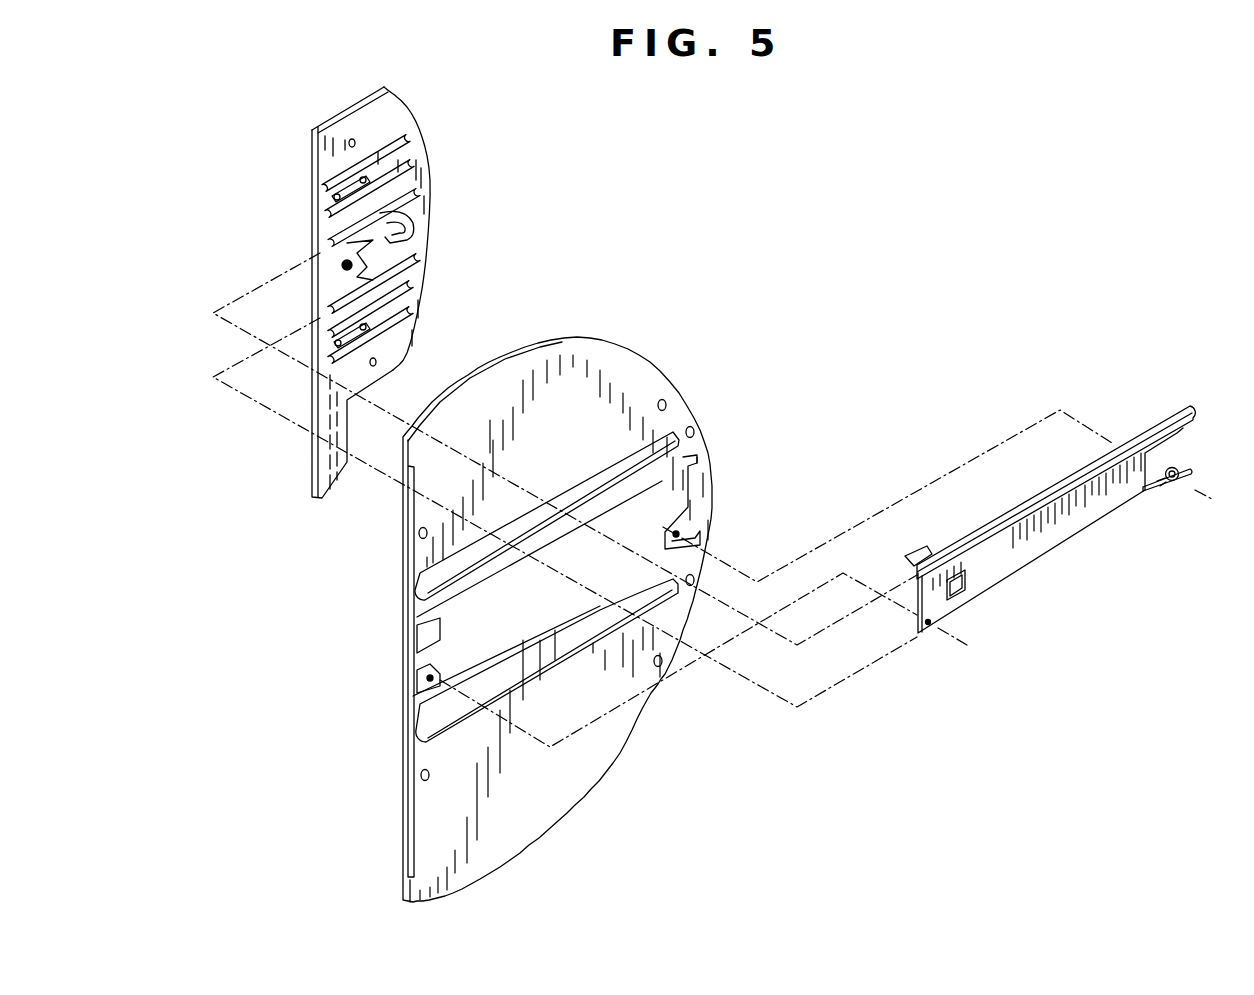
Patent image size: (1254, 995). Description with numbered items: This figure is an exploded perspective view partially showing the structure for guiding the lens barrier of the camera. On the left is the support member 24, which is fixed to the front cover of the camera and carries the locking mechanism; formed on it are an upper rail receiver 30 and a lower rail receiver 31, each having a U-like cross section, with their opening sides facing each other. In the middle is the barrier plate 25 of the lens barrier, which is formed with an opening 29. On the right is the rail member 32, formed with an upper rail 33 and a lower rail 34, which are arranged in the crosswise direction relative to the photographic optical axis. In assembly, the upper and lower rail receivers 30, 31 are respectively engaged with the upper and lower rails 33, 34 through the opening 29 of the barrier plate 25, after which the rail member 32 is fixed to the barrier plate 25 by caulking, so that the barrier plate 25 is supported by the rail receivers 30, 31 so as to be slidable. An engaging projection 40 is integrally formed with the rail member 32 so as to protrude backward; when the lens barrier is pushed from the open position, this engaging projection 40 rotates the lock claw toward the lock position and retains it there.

The support member 24 is at (363, 292).
The barrier plate 25 is at (601, 592).
The opening 29 is at (510, 565).
The upper rail receiver 30 is at (420, 190).
The lower rail receiver 31 is at (420, 253).
The rail member 32 is at (1055, 523).
The upper rail 33 is at (1030, 500).
The lower rail 34 is at (928, 637).
The engaging projection 40 is at (925, 548).